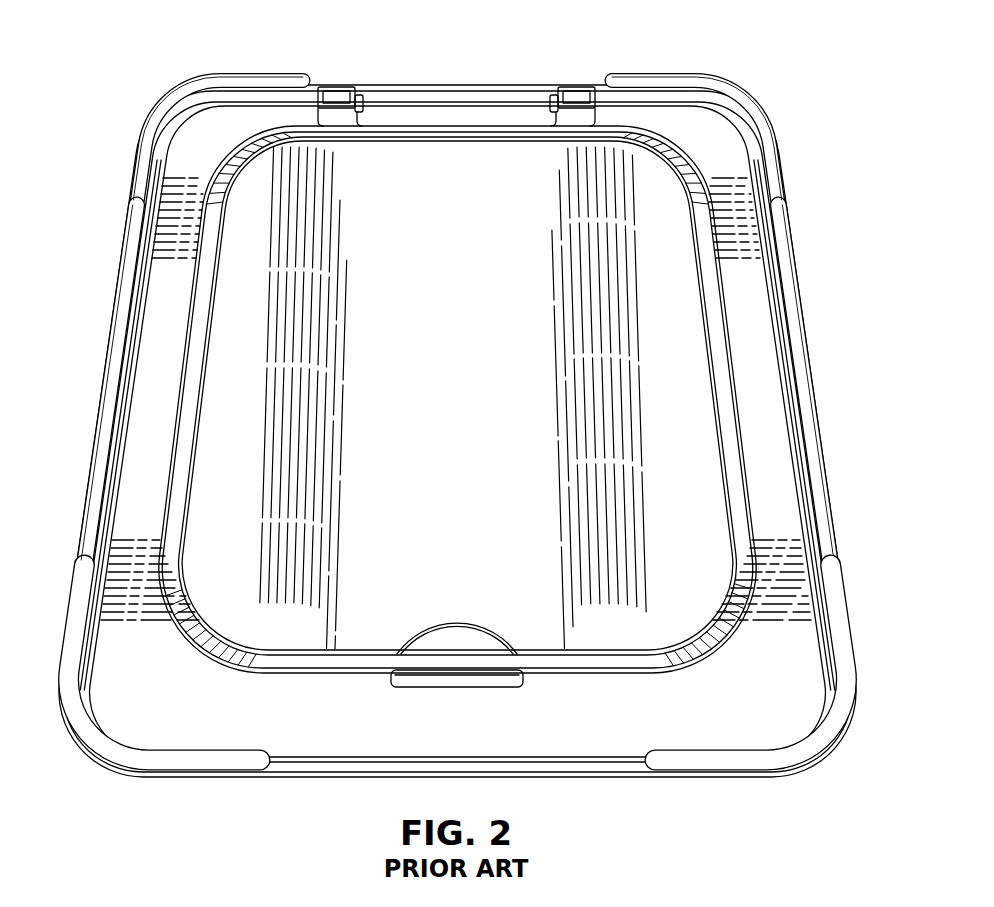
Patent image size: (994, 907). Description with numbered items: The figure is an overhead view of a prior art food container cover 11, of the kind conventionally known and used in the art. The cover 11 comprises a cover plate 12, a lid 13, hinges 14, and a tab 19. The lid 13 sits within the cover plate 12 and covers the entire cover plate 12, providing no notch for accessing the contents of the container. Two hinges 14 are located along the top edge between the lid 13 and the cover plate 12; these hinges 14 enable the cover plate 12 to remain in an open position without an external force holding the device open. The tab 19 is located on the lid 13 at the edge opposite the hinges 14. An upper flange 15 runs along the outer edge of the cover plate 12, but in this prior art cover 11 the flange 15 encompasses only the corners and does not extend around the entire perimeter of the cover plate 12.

The food container cover 11 is at (852, 276).
The cover plate 12 is at (127, 278).
The lid 13 is at (187, 348).
The hinges 14 is at (338, 96).
The upper flange 15 is at (802, 772).
The tab 19 is at (465, 624).